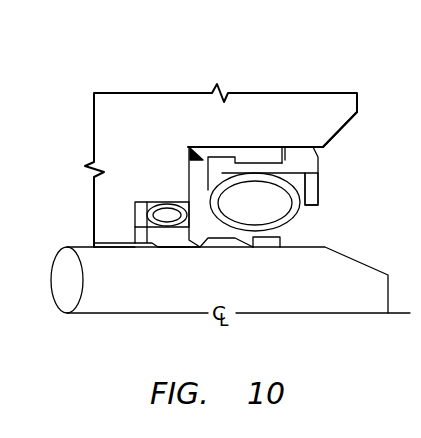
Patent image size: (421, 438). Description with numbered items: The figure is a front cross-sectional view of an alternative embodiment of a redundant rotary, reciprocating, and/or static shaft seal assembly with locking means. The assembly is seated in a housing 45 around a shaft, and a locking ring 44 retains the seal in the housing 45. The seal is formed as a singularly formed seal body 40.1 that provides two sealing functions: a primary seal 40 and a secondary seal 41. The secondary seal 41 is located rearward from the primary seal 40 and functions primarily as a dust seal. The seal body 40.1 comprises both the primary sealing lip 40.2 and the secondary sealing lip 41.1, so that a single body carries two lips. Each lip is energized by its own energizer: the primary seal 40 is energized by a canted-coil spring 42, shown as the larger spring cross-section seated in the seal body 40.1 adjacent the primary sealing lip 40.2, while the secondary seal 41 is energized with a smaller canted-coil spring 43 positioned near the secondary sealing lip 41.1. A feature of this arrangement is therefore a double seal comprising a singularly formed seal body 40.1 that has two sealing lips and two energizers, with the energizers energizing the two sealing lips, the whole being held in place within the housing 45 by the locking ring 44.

The primary seal 40 is at (285, 238).
The seal body 40.1 is at (198, 167).
The primary sealing lip 40.2 is at (273, 249).
The secondary seal 41 is at (141, 250).
The secondary sealing lip 41.1 is at (174, 248).
The canted-coil spring 42 is at (299, 183).
The canted-coil spring 43 is at (165, 200).
The locking ring 44 is at (317, 137).
The housing 45 is at (248, 118).